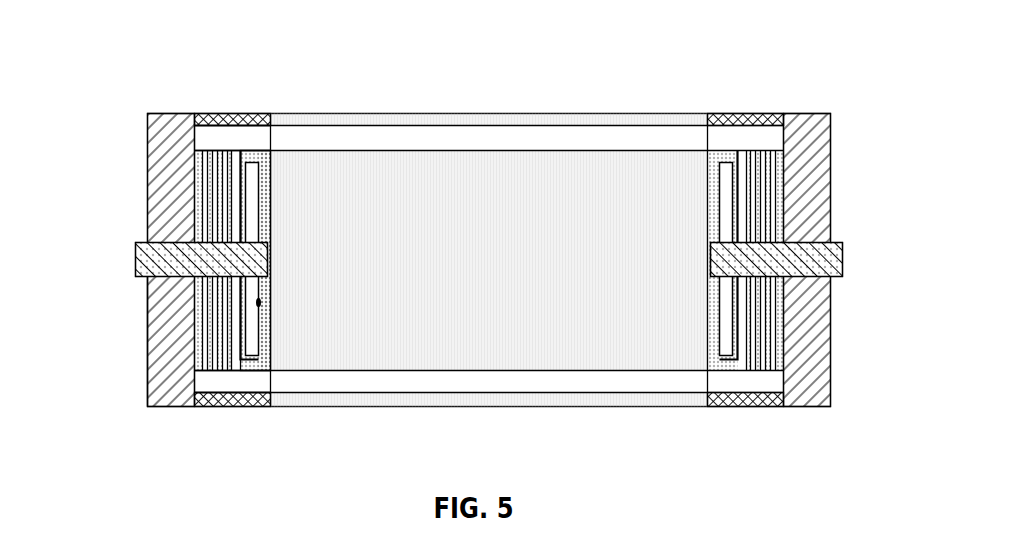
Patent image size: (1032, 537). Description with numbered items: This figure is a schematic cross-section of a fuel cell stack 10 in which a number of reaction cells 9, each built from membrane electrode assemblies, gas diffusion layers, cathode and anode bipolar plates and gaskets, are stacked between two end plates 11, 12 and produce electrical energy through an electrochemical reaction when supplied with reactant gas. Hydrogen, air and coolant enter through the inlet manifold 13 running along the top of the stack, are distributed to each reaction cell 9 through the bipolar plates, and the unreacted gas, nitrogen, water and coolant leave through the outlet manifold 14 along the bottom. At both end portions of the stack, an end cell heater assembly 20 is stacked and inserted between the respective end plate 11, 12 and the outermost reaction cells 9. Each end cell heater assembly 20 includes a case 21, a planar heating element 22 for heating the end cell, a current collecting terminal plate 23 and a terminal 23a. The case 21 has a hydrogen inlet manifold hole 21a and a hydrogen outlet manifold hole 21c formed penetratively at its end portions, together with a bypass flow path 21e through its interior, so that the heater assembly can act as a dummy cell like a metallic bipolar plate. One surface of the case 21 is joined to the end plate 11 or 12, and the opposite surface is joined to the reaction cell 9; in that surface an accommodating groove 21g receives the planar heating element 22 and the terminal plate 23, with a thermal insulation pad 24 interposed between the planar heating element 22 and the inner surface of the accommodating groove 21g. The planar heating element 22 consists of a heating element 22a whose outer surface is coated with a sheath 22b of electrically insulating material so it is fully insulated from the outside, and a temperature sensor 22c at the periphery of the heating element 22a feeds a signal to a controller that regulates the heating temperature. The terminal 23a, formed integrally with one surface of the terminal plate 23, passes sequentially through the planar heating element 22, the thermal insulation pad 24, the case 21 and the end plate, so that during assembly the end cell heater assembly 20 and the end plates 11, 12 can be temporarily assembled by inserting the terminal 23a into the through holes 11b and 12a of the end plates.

The reaction cell 9 is at (448, 160).
The fuel cell stack 10 is at (815, 98).
The end plate 11 is at (812, 203).
The through hole 11b is at (815, 272).
The end plate 12 is at (165, 172).
The through hole 12a is at (163, 269).
The inlet manifold 13 is at (515, 137).
The outlet manifold 14 is at (575, 382).
The end cell heater assembly 20 is at (220, 104).
The case 21 is at (205, 112).
The hydrogen inlet manifold hole 21a is at (207, 133).
The hydrogen outlet manifold hole 21c is at (203, 382).
The bypass flow path 21e is at (205, 212).
The accommodating groove 21g is at (242, 338).
The planar heating element 22 is at (330, 60).
The heating element 22a is at (247, 160).
The sheath 22b is at (263, 150).
The temperature sensor 22c is at (259, 302).
The current collecting terminal plate 23 is at (267, 342).
The terminal 23a is at (145, 258).
The thermal insulation pad 24 is at (233, 330).